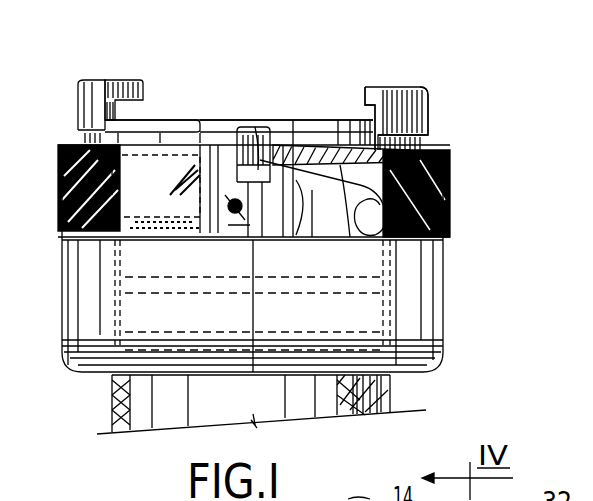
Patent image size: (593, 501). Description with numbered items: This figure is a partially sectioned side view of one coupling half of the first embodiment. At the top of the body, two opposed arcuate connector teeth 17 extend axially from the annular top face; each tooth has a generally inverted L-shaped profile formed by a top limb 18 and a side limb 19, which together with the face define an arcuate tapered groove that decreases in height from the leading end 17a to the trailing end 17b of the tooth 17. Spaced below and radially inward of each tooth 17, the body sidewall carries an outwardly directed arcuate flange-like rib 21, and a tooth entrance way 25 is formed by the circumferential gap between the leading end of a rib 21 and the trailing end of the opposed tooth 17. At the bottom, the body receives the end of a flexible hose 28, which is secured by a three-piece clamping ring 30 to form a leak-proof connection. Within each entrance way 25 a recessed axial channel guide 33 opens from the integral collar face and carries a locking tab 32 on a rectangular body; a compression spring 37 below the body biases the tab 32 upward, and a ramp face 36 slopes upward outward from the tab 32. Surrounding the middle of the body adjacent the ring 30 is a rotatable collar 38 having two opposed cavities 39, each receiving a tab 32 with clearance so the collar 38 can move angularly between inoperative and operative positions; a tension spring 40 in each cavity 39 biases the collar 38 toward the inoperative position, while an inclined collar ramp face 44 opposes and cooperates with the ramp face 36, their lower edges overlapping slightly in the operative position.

The connector tooth 17 is at (248, 77).
The leading end 17a is at (96, 76).
The trailing end 17b is at (136, 80).
The top limb 18 is at (373, 88).
The side limb 19 is at (400, 108).
The arcuate flange-like rib 21 is at (163, 120).
The tooth entrance way 25 is at (305, 120).
The flexible hose 28 is at (298, 405).
The clamping ring 30 is at (415, 305).
The locking tab 32 is at (262, 128).
The channel guide 33 is at (226, 238).
The ramp face 36 is at (393, 152).
The compression spring 37 is at (227, 148).
The rotatable collar 38 is at (458, 190).
The cavity 39 is at (298, 238).
The tension spring 40 is at (130, 248).
The collar ramp face 44 is at (448, 225).